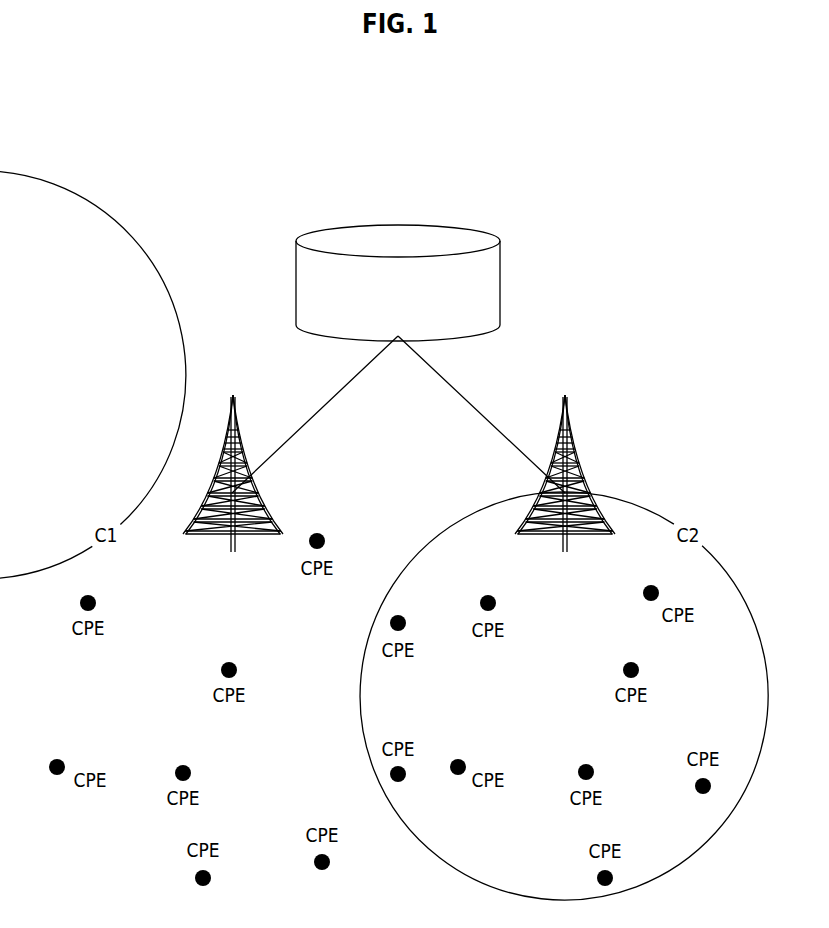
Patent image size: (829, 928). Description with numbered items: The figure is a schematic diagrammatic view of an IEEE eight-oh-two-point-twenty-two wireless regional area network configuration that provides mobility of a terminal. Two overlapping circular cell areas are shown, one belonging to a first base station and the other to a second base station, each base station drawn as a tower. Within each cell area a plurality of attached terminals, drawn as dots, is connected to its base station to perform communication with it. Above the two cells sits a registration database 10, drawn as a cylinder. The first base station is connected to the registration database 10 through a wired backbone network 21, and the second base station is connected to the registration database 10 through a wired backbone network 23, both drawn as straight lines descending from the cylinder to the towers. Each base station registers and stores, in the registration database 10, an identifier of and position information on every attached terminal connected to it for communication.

The registration database 10 is at (396, 223).
The wired backbone network 21 is at (326, 402).
The wired backbone network 23 is at (475, 400).